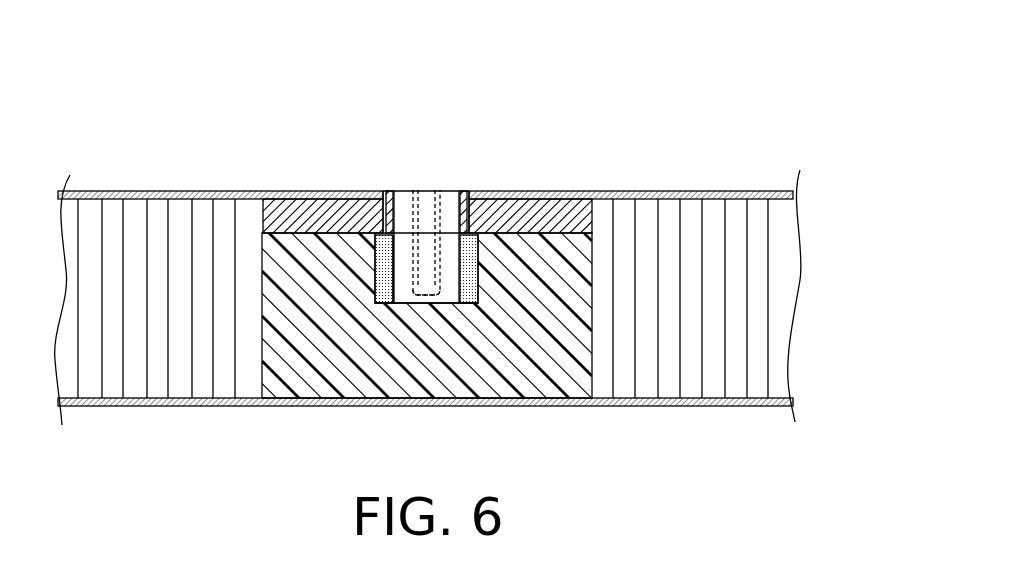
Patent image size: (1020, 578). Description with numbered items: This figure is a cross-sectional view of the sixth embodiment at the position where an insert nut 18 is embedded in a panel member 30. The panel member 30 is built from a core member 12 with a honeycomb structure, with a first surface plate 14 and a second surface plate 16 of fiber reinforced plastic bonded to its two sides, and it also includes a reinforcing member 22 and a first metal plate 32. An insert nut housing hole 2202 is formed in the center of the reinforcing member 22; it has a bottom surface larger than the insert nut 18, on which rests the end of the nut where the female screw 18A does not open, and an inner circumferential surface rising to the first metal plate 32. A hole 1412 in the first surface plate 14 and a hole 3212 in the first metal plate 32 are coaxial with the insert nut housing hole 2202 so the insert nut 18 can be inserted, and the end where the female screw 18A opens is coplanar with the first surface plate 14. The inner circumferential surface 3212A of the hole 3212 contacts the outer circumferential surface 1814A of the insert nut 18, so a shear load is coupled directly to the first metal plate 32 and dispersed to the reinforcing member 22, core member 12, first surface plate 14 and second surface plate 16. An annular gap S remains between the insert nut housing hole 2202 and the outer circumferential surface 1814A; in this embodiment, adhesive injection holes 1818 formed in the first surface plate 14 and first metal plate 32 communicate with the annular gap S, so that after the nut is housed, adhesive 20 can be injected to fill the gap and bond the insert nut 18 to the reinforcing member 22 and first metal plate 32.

The core member 12 is at (180, 213).
The first surface plate 14 is at (227, 191).
The second surface plate 16 is at (190, 406).
The insert nut 18 is at (450, 191).
The female screw 18A is at (420, 191).
The adhesive 20 is at (383, 303).
The reinforcing member 22 is at (545, 385).
The panel member 30 is at (697, 189).
The first metal plate 32 is at (553, 210).
The hole 1412 is at (402, 191).
The adhesive injection hole 1818 is at (382, 191).
The outer circumferential surface 1814A is at (494, 232).
The insert nut housing hole 2202 is at (468, 278).
The hole 3212 is at (408, 191).
The inner circumferential surface 3212A is at (406, 179).
The annular gap S is at (377, 261).